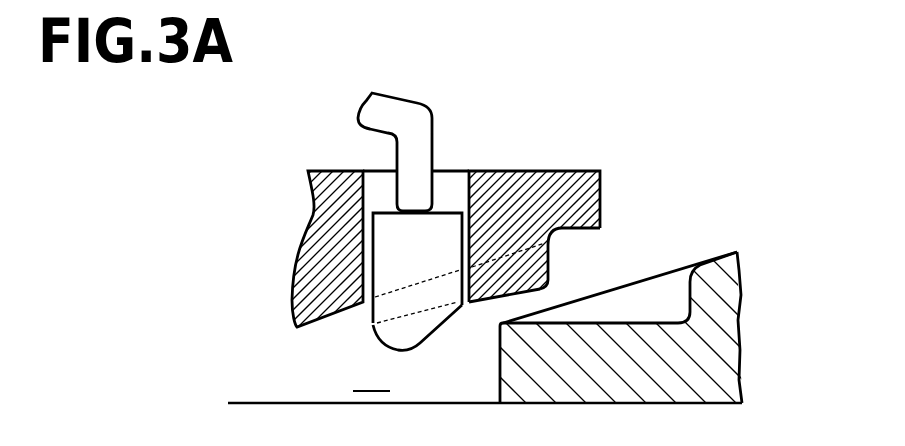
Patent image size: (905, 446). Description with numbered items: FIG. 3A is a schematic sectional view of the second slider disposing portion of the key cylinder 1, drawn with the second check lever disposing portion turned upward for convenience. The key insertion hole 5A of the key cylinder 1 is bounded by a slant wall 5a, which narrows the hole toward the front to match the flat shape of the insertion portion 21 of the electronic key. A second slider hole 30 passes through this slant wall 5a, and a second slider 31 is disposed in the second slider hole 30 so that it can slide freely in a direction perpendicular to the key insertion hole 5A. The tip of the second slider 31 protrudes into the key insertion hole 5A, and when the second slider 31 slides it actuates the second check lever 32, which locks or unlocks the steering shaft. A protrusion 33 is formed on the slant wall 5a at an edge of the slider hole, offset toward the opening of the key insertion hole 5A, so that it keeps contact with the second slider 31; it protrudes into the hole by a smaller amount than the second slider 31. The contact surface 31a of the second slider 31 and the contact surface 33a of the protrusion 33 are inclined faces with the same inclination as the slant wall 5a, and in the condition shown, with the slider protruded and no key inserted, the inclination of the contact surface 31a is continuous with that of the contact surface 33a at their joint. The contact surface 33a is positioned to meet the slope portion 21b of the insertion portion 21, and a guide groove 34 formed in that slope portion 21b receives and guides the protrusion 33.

The key cylinder 1 is at (557, 170).
The slant wall 5a is at (315, 325).
The key insertion hole 5A is at (372, 375).
The insertion portion 21 is at (722, 256).
The slope portion 21b is at (650, 278).
The second slider hole 30 is at (470, 195).
The second slider 31 is at (392, 232).
The contact surface 31a is at (433, 328).
The second check lever 32 is at (433, 118).
The protrusion 33 is at (552, 268).
The contact surface 33a is at (497, 302).
The guide groove 34 is at (667, 321).